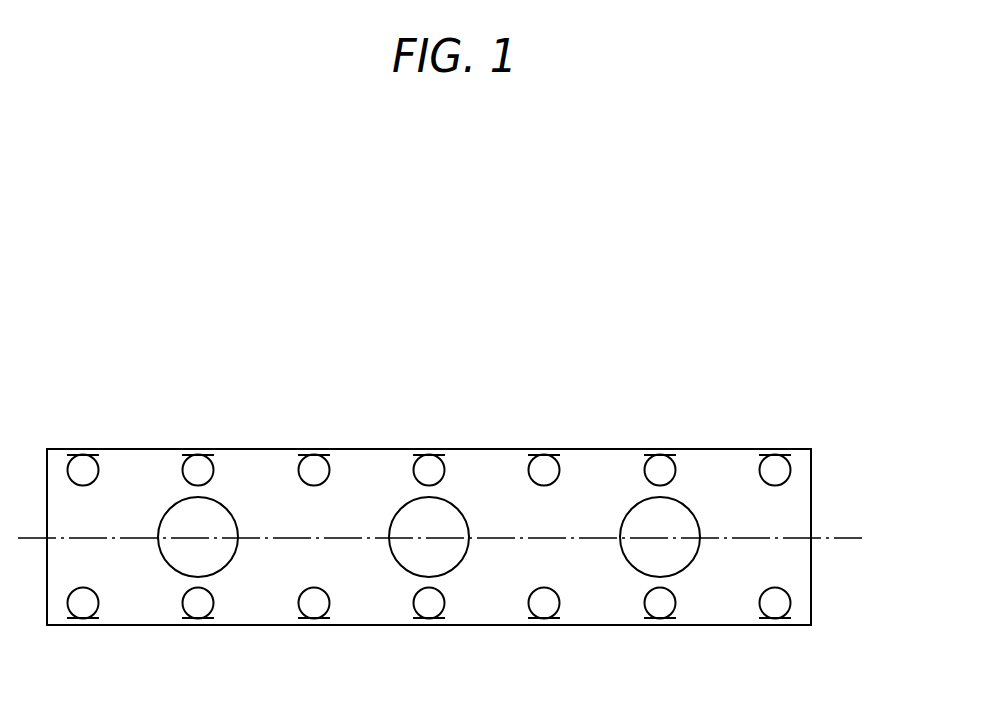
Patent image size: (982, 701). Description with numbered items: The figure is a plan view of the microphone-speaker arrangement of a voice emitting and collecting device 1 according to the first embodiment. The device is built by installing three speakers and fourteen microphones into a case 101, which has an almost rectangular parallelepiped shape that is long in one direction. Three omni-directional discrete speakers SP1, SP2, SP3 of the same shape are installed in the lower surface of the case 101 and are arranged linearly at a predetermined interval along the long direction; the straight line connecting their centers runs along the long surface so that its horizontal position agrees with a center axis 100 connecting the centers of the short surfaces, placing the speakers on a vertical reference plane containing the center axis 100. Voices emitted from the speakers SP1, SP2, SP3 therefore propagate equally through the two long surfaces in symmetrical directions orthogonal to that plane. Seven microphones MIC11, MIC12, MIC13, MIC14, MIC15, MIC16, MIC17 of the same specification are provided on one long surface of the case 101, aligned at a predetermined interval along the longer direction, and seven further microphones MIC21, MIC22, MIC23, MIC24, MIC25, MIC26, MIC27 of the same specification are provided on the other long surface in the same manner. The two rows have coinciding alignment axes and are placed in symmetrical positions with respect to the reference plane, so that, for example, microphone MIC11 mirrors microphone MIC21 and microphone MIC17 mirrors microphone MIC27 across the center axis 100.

The voice emitting and collecting device 1 is at (798, 351).
The center axis 100 is at (843, 530).
The case 101 is at (811, 568).
The microphone MIC11 is at (89, 618).
The microphone MIC12 is at (204, 618).
The microphone MIC13 is at (320, 618).
The microphone MIC14 is at (435, 618).
The microphone MIC15 is at (550, 618).
The microphone MIC16 is at (666, 618).
The microphone MIC17 is at (781, 618).
The microphone MIC21 is at (118, 428).
The microphone MIC22 is at (233, 428).
The microphone MIC23 is at (349, 428).
The microphone MIC24 is at (464, 428).
The microphone MIC25 is at (579, 428).
The microphone MIC26 is at (695, 428).
The microphone MIC27 is at (810, 428).
The discrete speaker SP1 is at (236, 516).
The discrete speaker SP2 is at (467, 516).
The discrete speaker SP3 is at (698, 516).